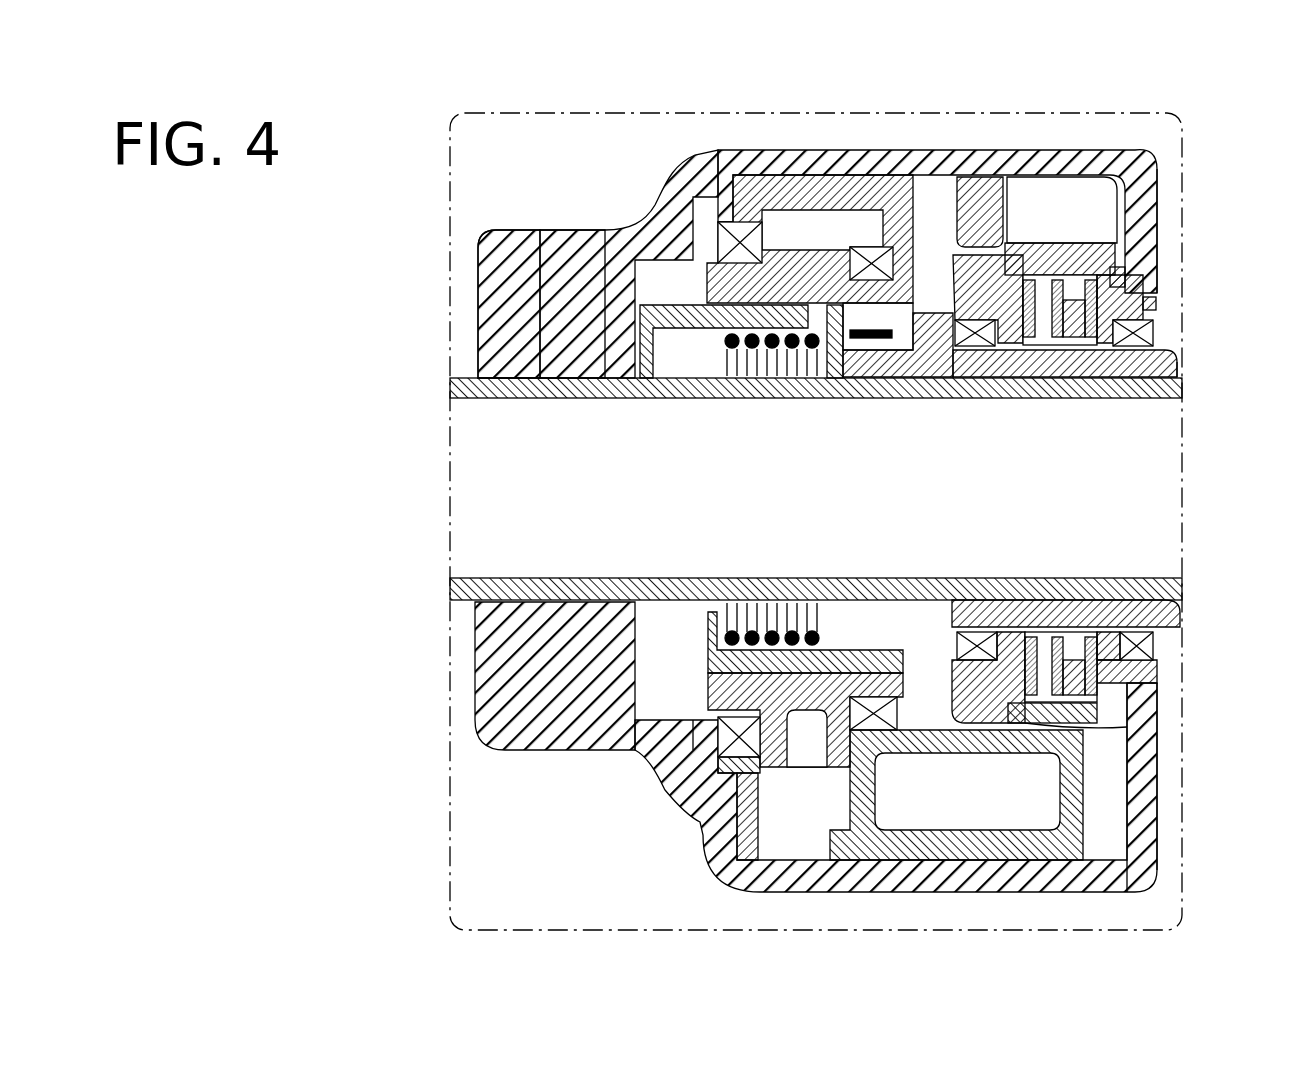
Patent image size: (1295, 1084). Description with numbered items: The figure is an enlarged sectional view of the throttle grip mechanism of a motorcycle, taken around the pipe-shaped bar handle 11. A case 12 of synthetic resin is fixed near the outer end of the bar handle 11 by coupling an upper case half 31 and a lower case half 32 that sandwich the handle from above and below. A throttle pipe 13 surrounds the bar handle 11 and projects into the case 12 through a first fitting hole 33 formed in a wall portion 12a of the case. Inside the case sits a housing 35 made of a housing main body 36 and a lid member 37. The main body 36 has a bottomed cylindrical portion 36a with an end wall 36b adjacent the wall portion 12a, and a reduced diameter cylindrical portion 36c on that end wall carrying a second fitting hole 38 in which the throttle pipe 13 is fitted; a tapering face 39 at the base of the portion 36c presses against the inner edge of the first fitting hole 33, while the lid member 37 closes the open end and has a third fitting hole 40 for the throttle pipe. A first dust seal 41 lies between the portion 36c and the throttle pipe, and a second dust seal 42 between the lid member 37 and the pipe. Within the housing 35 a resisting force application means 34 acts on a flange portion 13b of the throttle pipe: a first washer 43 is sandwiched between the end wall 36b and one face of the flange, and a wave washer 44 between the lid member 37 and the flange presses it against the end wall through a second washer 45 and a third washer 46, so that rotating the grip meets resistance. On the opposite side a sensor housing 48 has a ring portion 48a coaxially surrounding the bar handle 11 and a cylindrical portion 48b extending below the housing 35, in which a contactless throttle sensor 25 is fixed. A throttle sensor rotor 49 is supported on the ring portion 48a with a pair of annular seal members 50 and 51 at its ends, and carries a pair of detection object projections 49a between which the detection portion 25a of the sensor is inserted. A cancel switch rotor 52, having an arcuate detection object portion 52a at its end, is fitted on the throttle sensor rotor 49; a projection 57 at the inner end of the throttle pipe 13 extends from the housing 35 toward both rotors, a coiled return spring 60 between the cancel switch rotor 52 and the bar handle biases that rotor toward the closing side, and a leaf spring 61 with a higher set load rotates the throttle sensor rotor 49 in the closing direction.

The bar handle 11 is at (772, 398).
The case 12 is at (572, 168).
The wall portion 12a is at (1157, 222).
The throttle pipe 13 is at (1180, 366).
The flange portion 13b is at (1150, 716).
The throttle sensor 25 is at (1040, 788).
The detection portion 25a is at (808, 706).
The upper case half 31 is at (566, 257).
The lower case half 32 is at (508, 640).
The first fitting hole 33 is at (1145, 324).
The resisting force application means 34 is at (1045, 648).
The housing 35 is at (1236, 115).
The housing main body 36 is at (1098, 230).
The bottomed cylindrical portion 36a is at (1043, 262).
The end wall 36b is at (1118, 277).
The reduced diameter cylindrical portion 36c is at (1150, 300).
The lid member 37 is at (1087, 147).
The second fitting hole 38 is at (1107, 350).
The tapering face 39 is at (1160, 684).
The third fitting hole 40 is at (1012, 350).
The first dust seal 41 is at (1152, 385).
The second dust seal 42 is at (975, 350).
The first washer 43 is at (1118, 600).
The wave washer 44 is at (1047, 350).
The second washer 45 is at (1075, 600).
The third washer 46 is at (1005, 600).
The sensor housing 48 is at (703, 812).
The ring portion 48a is at (806, 178).
The cylindrical portion 48b is at (1090, 812).
The throttle sensor rotor 49 is at (833, 398).
The detection object projections 49a is at (680, 766).
The annular seal member 50 is at (888, 270).
The annular seal member 51 is at (740, 222).
The cancel switch rotor 52 is at (716, 600).
The detection object portion 52a is at (650, 398).
The projection 57 is at (918, 350).
The return spring 60 is at (727, 372).
The leaf spring 61 is at (880, 340).